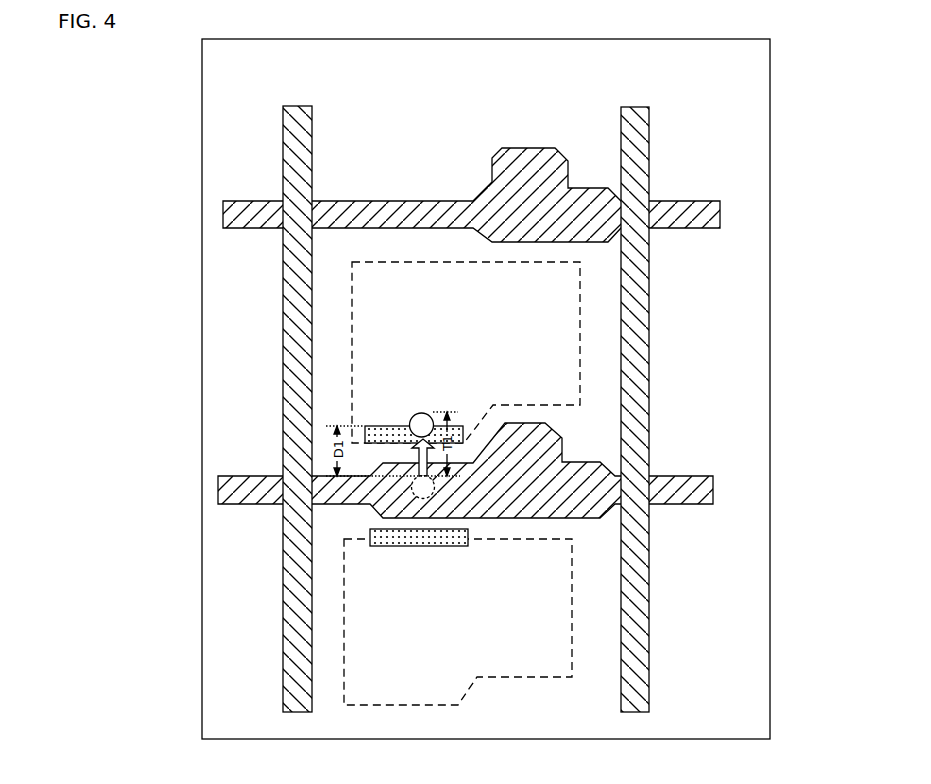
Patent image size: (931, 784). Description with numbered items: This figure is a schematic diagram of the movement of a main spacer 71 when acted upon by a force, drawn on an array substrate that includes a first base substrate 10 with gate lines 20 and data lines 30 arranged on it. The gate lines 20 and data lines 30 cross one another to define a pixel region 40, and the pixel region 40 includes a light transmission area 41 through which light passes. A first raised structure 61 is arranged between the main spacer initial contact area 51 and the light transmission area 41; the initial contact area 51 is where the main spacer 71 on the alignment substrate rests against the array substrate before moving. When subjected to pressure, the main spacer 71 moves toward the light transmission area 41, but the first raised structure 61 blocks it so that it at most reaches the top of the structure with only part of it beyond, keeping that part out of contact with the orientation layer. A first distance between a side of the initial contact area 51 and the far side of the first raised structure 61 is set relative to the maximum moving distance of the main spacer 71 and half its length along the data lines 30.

The first base substrate 10 is at (757, 131).
The gate line 20 is at (698, 207).
The data line 30 is at (632, 118).
The pixel region 40 is at (605, 373).
The light transmission area 41 is at (570, 320).
The main spacer initial contact area 51 is at (420, 485).
The first raised structure 61 is at (383, 536).
The main spacer 71 is at (415, 418).